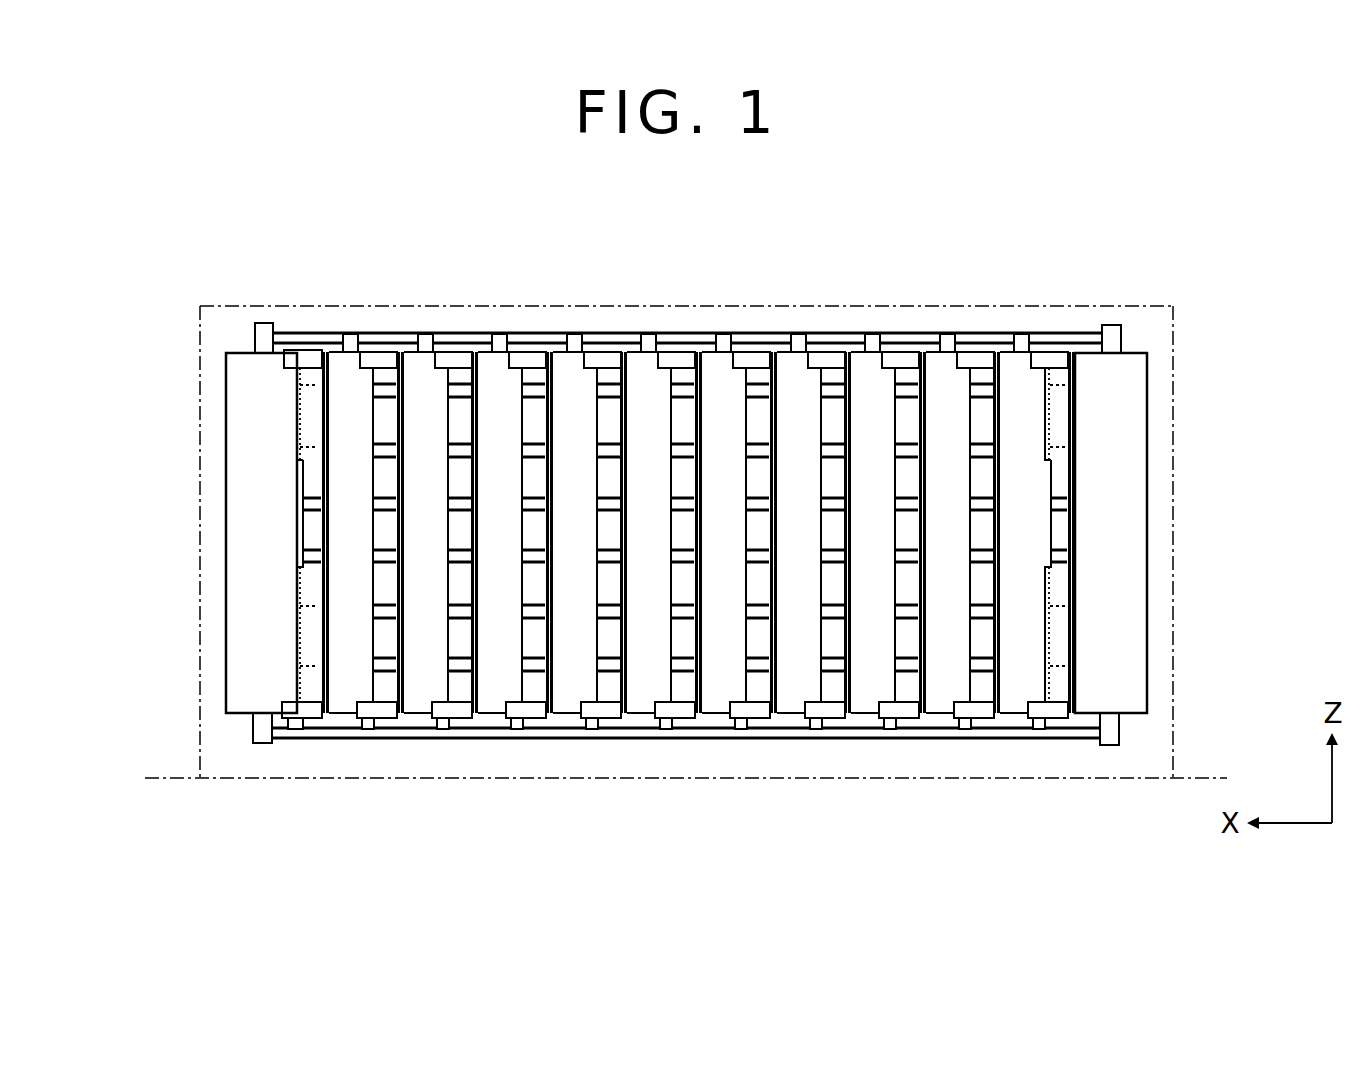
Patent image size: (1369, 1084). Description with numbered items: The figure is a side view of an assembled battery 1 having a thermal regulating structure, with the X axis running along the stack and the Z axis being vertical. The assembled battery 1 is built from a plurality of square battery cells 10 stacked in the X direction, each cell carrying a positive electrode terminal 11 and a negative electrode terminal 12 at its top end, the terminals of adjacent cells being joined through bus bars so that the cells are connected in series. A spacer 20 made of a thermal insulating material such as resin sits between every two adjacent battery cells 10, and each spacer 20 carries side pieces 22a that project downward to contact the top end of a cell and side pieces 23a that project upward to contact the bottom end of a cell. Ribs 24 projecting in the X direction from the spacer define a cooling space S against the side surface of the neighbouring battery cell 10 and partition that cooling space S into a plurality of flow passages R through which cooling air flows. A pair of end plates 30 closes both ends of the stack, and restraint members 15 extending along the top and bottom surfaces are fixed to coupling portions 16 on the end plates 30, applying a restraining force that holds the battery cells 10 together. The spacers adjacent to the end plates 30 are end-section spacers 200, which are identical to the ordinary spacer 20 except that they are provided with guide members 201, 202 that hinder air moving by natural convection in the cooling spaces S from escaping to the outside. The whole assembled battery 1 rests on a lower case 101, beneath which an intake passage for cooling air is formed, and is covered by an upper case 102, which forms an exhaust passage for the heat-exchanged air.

The assembled battery 1 is at (172, 291).
The battery cell 10 is at (1033, 544).
The positive electrode terminal 11 is at (947, 338).
The negative electrode terminal 12 is at (1021, 338).
The restraint member 15 is at (990, 338).
The coupling portion 16 is at (263, 330).
The spacer 20 is at (965, 729).
The side piece 22a is at (313, 352).
The side piece 23a is at (305, 720).
The rib 24 is at (384, 667).
The end plate 30 is at (237, 371).
The lower case 101 is at (213, 780).
The upper case 102 is at (198, 535).
The end-section spacer 200 is at (1039, 729).
The guide member 201 is at (297, 413).
The guide member 202 is at (297, 640).
The flow passage R is at (392, 678).
The cooling space S is at (299, 517).